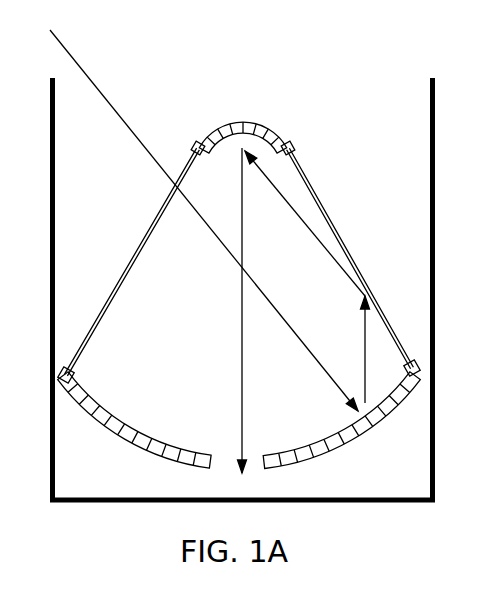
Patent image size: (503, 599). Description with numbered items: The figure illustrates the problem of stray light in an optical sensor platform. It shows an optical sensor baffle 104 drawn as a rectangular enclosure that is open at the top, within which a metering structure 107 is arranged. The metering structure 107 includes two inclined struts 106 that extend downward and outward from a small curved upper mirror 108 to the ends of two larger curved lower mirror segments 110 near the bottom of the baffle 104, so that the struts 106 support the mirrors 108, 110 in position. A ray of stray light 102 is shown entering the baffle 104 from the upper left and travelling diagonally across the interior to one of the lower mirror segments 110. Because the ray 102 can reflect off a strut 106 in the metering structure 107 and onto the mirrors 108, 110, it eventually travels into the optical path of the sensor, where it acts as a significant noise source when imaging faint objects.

The stray light 102 is at (92, 80).
The optical sensor baffle 104 is at (434, 90).
The strut 106 is at (319, 206).
The metering structure 107 is at (122, 222).
The mirror 108 is at (268, 128).
The mirror 110 is at (118, 445).